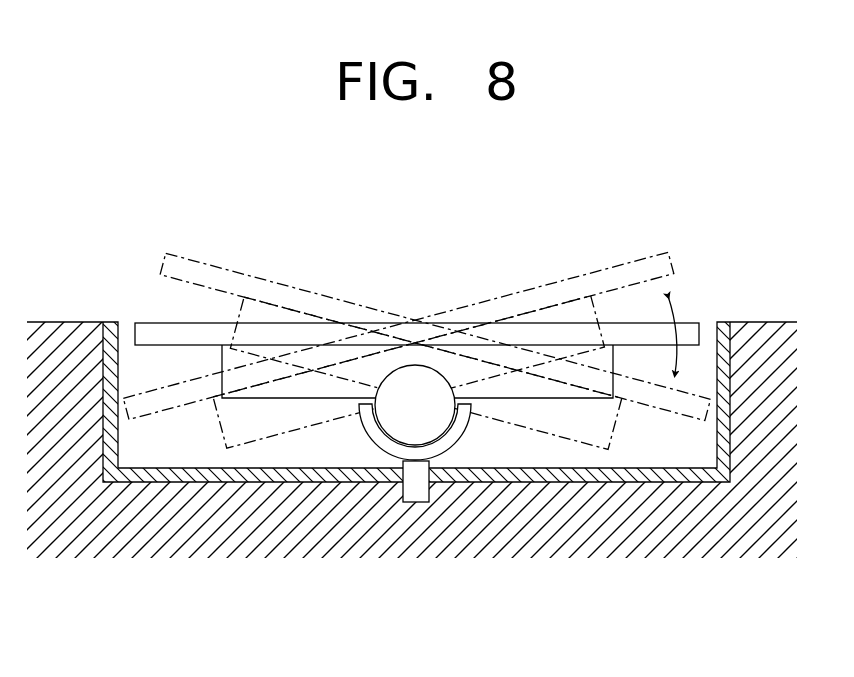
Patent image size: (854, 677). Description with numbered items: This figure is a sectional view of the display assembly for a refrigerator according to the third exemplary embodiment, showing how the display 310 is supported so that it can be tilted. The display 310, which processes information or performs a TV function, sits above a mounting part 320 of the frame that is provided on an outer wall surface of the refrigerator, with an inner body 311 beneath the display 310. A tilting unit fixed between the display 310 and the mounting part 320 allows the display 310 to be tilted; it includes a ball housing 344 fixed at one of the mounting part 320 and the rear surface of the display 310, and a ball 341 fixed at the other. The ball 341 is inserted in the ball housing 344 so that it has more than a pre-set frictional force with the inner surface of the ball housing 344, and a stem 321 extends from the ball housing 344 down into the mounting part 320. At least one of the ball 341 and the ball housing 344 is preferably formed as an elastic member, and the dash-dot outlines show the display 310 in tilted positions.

The display 310 is at (186, 337).
The inner body 311 is at (276, 362).
The mounting part 320 is at (603, 477).
The stem 321 is at (423, 502).
The ball 341 is at (392, 421).
The ball housing 344 is at (459, 437).